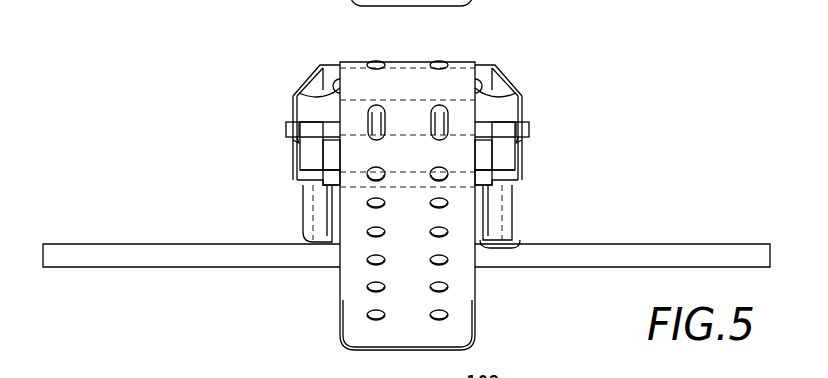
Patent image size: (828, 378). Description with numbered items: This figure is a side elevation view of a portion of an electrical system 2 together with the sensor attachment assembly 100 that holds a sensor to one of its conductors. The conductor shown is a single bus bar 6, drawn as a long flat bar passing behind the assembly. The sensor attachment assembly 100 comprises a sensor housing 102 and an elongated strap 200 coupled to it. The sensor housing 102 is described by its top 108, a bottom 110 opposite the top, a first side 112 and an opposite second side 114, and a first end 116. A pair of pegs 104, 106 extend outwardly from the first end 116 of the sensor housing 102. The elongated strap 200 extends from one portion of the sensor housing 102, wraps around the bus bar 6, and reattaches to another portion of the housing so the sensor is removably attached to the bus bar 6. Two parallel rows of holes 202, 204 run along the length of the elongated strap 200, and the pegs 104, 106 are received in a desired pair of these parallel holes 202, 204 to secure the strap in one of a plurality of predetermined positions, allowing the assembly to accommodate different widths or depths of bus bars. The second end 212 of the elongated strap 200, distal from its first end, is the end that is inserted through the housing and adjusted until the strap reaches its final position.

The sensor attachment assembly 100 is at (590, 90).
The sensor housing 102 is at (280, 95).
The peg 104 is at (395, 97).
The peg 106 is at (437, 115).
The top 108 is at (487, 62).
The bottom 110 is at (512, 242).
The first side 112 is at (293, 150).
The second side 114 is at (518, 153).
The first end 116 is at (482, 200).
The elongated strap 200 is at (348, 278).
The holes 202 is at (368, 112).
The holes 204 is at (447, 110).
The second end 212 is at (517, 3).
The bus bar 6 is at (131, 250).
The electrical system 2 is at (171, 303).